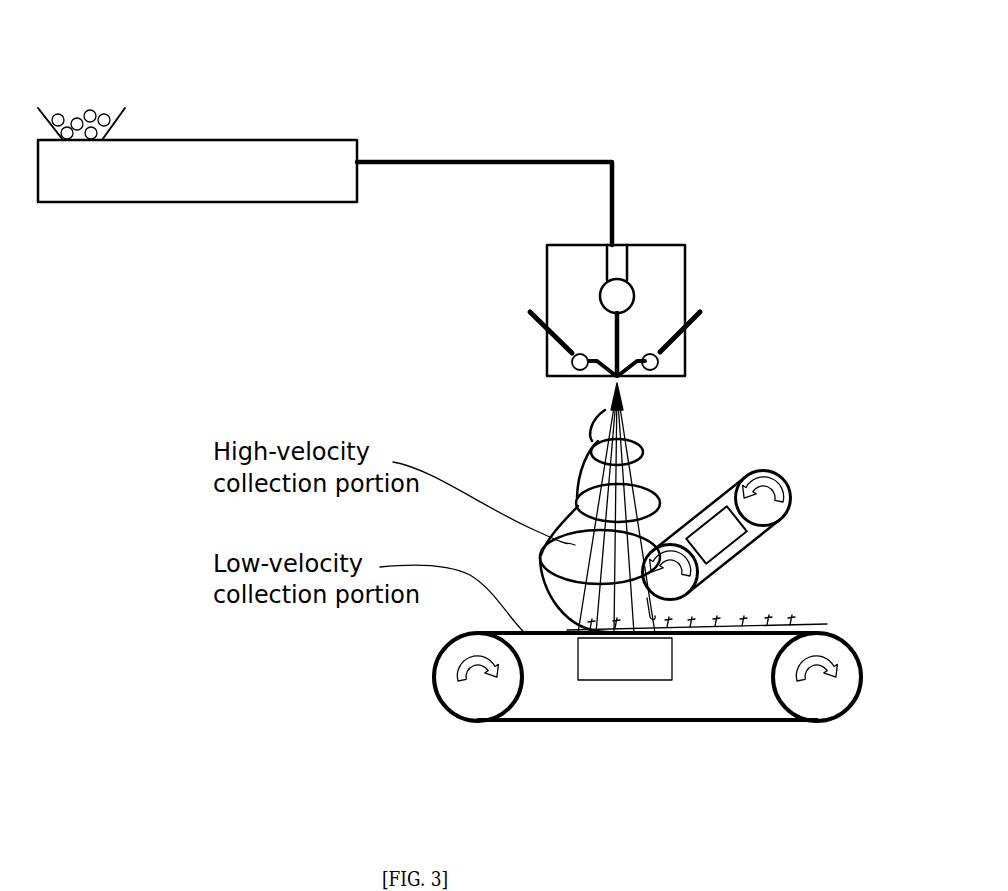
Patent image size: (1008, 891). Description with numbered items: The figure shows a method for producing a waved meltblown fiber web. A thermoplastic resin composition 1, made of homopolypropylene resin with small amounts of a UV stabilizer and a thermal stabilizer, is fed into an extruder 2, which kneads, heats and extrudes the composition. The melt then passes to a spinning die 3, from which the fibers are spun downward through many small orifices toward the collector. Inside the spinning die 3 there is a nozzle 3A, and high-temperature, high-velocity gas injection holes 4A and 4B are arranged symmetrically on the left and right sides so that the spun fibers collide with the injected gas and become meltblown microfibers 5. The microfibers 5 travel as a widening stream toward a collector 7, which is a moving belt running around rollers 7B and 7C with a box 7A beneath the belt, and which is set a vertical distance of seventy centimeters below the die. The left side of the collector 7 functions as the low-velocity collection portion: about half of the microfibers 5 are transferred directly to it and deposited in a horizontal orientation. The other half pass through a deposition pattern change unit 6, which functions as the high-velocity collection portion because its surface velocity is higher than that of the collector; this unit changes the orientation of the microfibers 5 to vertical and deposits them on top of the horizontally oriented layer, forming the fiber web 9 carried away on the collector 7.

The thermoplastic resin composition 1 is at (86, 92).
The extruder 2 is at (240, 130).
The spinning die 3 is at (637, 243).
The nozzle 3A is at (610, 336).
The high-temperature and high-velocity gas injection hole 4A is at (532, 312).
The high-temperature and high-velocity gas injection hole 4B is at (693, 323).
The meltblown microfibers 5 is at (610, 410).
The deposition pattern change unit 6 is at (713, 500).
The collector 7 is at (670, 732).
The suction box 7A is at (593, 670).
The first conveyor roller 7B is at (478, 707).
The second conveyor roller 7C is at (823, 703).
The nonwoven fabric web 9 is at (828, 622).